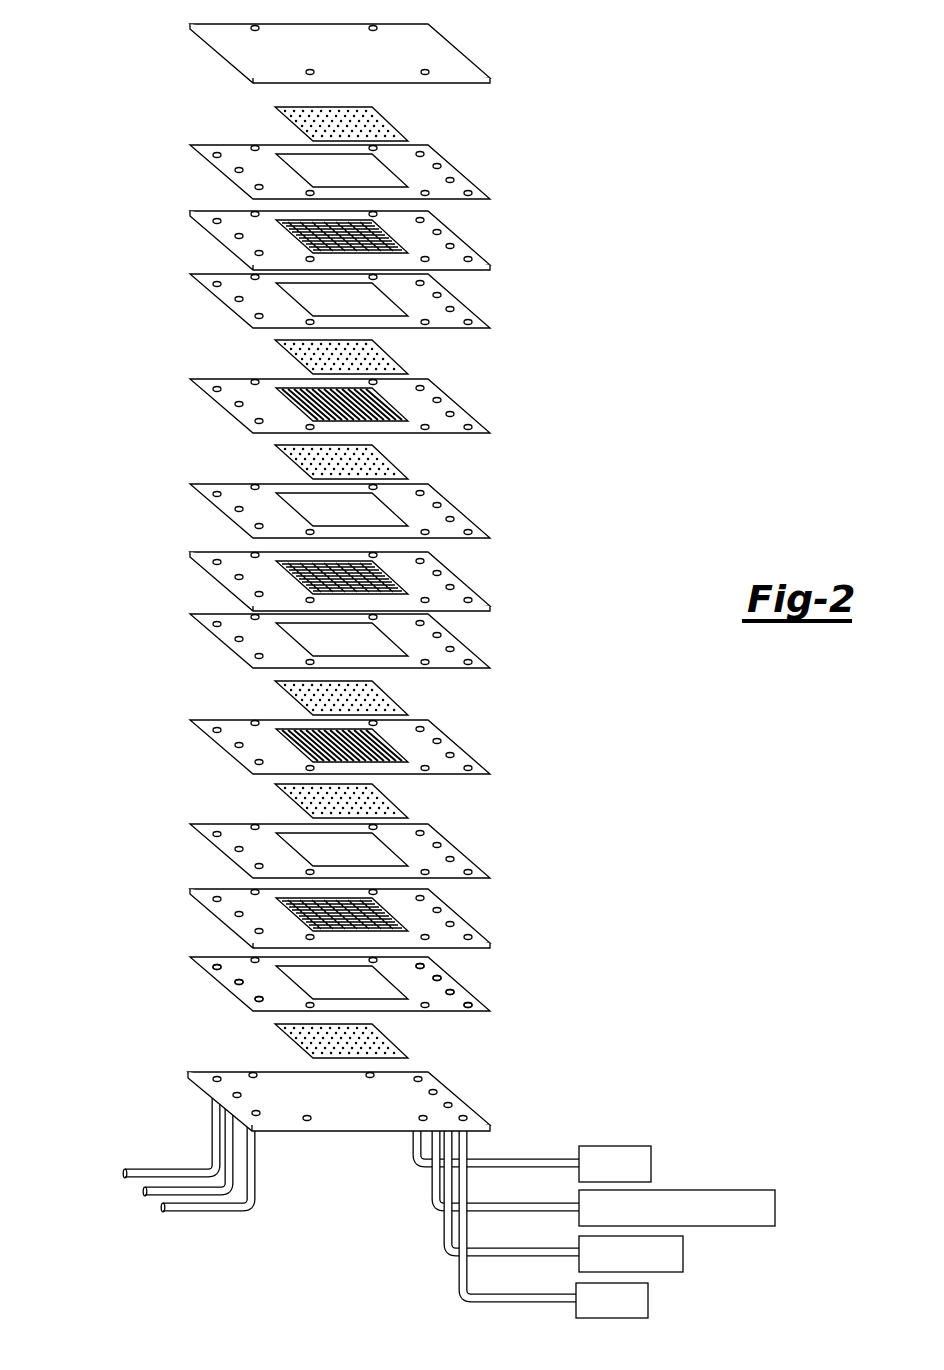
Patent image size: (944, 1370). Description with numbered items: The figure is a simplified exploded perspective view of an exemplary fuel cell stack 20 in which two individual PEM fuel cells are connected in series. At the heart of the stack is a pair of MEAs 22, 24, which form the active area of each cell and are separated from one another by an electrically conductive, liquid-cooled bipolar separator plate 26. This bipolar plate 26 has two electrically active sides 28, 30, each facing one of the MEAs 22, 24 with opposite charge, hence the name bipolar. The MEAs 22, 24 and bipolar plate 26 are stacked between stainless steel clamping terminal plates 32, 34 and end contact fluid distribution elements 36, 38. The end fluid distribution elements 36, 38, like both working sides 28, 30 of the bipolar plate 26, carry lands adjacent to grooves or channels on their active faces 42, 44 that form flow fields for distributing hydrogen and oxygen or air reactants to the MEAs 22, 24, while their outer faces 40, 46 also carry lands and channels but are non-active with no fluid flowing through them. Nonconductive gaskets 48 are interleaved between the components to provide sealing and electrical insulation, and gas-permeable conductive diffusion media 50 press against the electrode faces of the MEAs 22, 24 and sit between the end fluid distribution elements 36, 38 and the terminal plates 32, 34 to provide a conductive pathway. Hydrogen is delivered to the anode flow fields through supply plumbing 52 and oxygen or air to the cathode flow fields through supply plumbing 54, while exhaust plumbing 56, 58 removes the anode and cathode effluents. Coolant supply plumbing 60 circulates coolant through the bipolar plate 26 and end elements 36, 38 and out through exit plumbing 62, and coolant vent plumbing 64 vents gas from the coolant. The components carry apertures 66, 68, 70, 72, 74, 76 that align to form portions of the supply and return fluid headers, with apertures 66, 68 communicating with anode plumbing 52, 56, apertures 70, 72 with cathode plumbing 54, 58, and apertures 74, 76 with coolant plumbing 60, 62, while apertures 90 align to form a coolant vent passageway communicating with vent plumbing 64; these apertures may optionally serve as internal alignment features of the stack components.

The fuel cell stack 20 is at (66, 124).
The MEA 22 is at (220, 410).
The MEA 24 is at (217, 748).
The bipolar separator plate 26 is at (213, 582).
The electrically active side 28 is at (450, 583).
The electrically active side 30 is at (470, 612).
The clamping terminal plate 32 is at (357, 1113).
The clamping terminal plate 34 is at (218, 55).
The end contact fluid distribution element 36 is at (213, 238).
The end contact fluid distribution element 38 is at (220, 922).
The face of end fluid distribution element 40 is at (447, 240).
The active face 42 is at (470, 272).
The active face 44 is at (460, 930).
The face of end fluid distribution element 46 is at (483, 952).
The gasket 48 is at (232, 148).
The diffusion media 50 is at (297, 125).
The supply plumbing 52 is at (459, 1283).
The supply plumbing 54 is at (553, 1157).
The exhaust plumbing 56 is at (256, 1170).
The exhaust plumbing 58 is at (211, 1118).
The coolant supply plumbing 60 is at (537, 1247).
The coolant exit plumbing 62 is at (224, 1163).
The coolant vent plumbing 64 is at (535, 1202).
The aperture 66 is at (468, 1008).
The aperture 68 is at (255, 999).
The aperture 70 is at (424, 966).
The aperture 72 is at (213, 966).
The aperture 74 is at (448, 994).
The aperture 76 is at (235, 982).
The aperture 90 is at (441, 978).